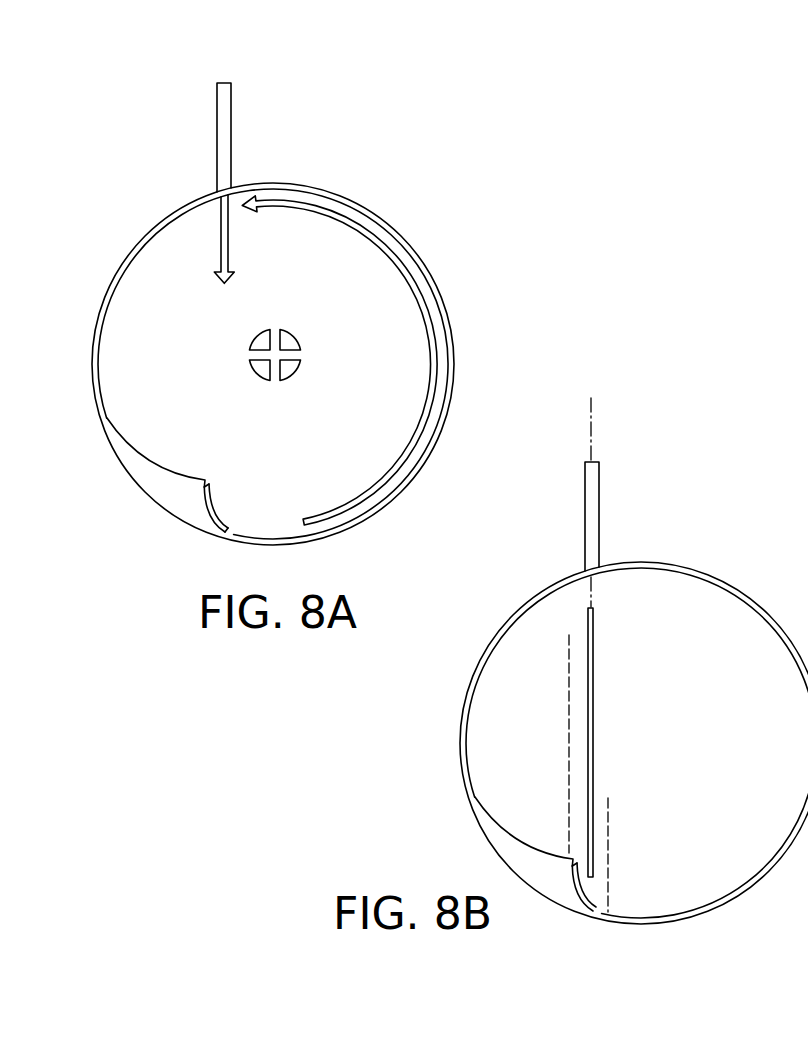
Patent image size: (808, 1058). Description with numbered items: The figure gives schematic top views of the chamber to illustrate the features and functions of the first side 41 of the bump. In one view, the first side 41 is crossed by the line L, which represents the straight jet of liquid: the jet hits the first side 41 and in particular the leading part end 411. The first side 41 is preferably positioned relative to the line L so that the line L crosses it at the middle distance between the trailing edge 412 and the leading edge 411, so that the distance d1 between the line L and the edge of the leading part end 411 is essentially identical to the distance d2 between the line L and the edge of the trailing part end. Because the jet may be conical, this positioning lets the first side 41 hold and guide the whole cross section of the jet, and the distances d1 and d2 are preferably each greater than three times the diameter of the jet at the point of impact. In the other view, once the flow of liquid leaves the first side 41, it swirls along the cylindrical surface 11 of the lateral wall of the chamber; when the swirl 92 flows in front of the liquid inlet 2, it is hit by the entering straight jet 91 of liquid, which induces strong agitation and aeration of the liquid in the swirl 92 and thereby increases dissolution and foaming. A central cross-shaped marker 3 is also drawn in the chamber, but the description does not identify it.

In FIG. 8A, the cylindrical surface 11 is at (455, 362).
In FIG. 8A, the liquid inlet 2 is at (217, 188).
In FIG. 8A, the straight jet 91 is at (220, 232).
In FIG. 8A, the swirl 92 is at (273, 200).
In FIG. 8A, the center marker 3 is at (293, 333).
In FIG. 8A, the first side 41 is at (208, 512).
In FIG. 8A, the leading part end 411 is at (210, 490).
In FIG. 8A, the trailing edge 412 is at (228, 530).
In FIG. 8B, the line L is at (594, 743).
In FIG. 8B, the distance d1 is at (525, 712).
In FIG. 8B, the distance d2 is at (548, 822).